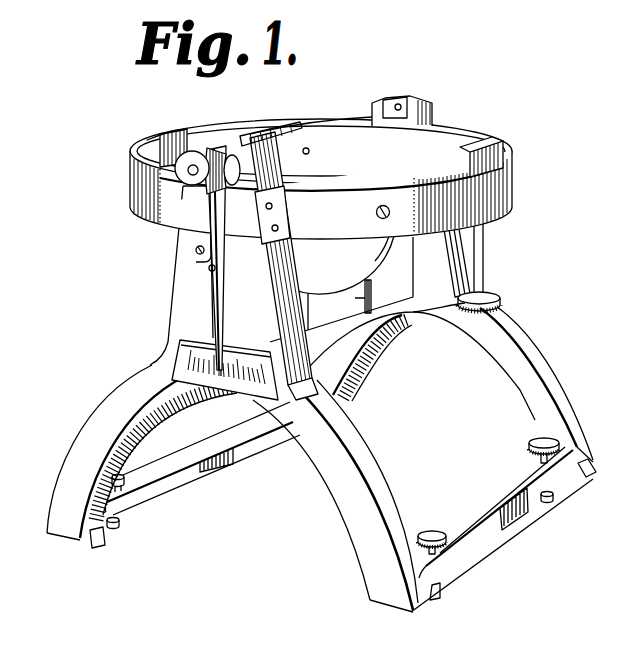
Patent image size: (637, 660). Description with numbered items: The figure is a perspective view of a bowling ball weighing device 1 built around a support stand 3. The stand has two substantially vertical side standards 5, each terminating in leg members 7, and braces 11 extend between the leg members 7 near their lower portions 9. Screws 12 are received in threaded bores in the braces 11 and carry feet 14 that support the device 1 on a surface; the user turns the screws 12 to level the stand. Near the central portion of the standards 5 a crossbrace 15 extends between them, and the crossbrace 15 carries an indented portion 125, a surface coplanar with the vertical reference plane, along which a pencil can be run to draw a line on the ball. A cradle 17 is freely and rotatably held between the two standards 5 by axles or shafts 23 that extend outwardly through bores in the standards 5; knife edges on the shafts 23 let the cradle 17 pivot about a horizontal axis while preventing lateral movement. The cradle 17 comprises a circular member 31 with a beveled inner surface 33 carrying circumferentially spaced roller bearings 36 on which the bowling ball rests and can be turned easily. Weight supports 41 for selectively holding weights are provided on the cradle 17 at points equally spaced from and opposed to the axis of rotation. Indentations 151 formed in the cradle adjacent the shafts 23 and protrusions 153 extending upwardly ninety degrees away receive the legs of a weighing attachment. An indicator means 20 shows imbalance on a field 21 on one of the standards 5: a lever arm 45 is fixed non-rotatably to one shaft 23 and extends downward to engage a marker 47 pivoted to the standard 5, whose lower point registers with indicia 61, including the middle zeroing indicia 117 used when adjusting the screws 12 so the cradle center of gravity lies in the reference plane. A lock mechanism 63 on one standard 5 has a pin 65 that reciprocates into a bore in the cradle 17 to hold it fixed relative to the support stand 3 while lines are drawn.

The bowling ball weighing device 1 is at (335, 79).
The support stand 3 is at (583, 362).
The side standards 5 is at (178, 294).
The leg members 7 is at (352, 362).
The lower portions 9 is at (95, 535).
The braces 11 is at (183, 475).
The screws 12 is at (529, 446).
The feet 14 is at (120, 522).
The crossbrace 15 is at (383, 262).
The cradle 17 is at (460, 125).
The indicator means 20 is at (200, 275).
The field 21 is at (291, 400).
The axles or shafts 23 is at (188, 171).
The circular member 31 is at (260, 124).
The beveled inner surface 33 is at (351, 125).
The roller bearings 36 is at (310, 152).
The weight supports 41 is at (500, 300).
The lever arm 45 is at (190, 225).
The marker 47 is at (225, 318).
The indicia 61 is at (183, 380).
The lock mechanism 63 is at (283, 183).
The pin 65 is at (236, 142).
The zeroing indicia 117 is at (226, 392).
The indented portion 125 is at (372, 292).
The indentations 151 is at (392, 122).
The protrusions 153 is at (171, 127).